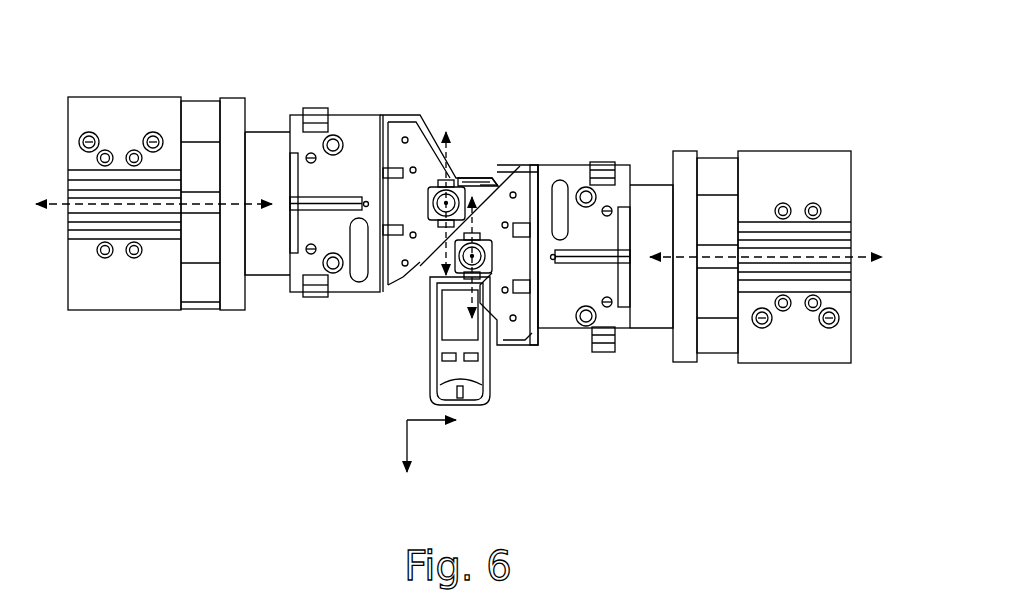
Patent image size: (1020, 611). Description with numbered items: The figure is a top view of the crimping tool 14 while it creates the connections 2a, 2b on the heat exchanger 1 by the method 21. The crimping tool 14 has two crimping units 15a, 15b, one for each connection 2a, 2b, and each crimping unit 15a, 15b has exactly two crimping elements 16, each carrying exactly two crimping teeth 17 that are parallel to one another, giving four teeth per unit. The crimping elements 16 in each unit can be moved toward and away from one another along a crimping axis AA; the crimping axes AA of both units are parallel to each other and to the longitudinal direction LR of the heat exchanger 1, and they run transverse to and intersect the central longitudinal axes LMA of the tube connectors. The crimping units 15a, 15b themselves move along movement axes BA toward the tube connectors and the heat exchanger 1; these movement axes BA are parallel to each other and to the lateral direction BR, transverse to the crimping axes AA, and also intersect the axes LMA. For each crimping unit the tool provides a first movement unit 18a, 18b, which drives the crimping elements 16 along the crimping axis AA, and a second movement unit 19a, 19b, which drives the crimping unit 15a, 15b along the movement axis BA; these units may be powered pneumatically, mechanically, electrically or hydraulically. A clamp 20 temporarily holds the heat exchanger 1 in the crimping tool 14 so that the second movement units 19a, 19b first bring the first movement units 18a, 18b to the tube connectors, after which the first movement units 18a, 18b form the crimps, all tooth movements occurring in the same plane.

The heat exchanger 1 is at (496, 396).
The connection 2a is at (465, 152).
The connection 2b is at (445, 287).
The crimping tool 14 is at (205, 94).
The crimping unit 15a is at (287, 94).
The crimping unit 15b is at (666, 148).
The crimping element 16 is at (412, 128).
The crimping tooth 17 is at (487, 177).
The first movement unit 18a is at (350, 128).
The first movement unit 18b is at (650, 317).
The second movement unit 19a is at (117, 288).
The second movement unit 19b is at (793, 165).
The clamp 20 is at (427, 272).
The method 21 is at (772, 30).
The crimping axis AA is at (450, 126).
The movement axis BA is at (58, 212).
The central longitudinal axis LMA is at (460, 208).
The lateral direction BR is at (451, 434).
The longitudinal direction LR is at (426, 460).